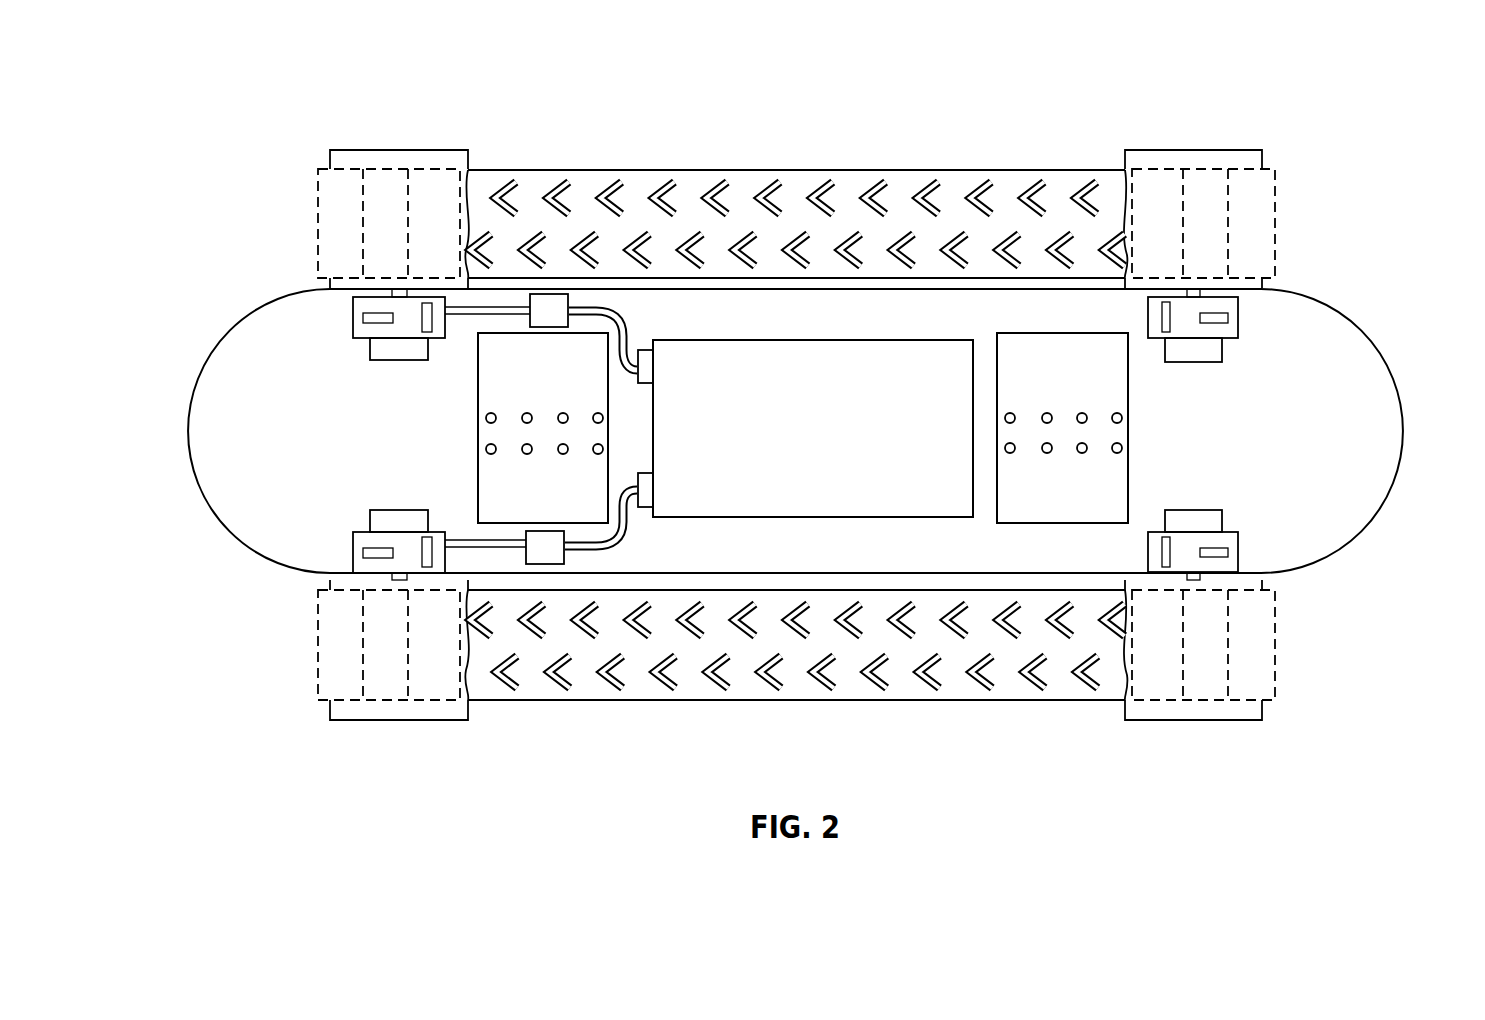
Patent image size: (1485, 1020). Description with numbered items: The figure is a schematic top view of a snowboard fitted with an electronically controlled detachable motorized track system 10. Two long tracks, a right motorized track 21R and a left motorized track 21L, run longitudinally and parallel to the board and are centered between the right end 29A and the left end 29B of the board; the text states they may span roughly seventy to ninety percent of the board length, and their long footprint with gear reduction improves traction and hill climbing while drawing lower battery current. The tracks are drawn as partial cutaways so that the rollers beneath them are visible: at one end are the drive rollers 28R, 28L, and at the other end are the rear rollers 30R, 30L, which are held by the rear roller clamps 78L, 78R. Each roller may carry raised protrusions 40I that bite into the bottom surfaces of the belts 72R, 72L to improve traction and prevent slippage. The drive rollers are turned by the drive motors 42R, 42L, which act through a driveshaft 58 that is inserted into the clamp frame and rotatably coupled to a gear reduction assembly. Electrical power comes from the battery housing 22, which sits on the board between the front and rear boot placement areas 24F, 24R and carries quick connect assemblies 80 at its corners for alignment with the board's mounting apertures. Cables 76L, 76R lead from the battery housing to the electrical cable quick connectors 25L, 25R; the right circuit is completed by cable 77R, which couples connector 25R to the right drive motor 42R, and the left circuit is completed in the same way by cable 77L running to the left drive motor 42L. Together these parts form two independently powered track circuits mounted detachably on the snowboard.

The detachable motorized track system 10 is at (518, 104).
The left motorized track 21L is at (752, 168).
The right motorized track 21R is at (868, 701).
The battery housing 22 is at (829, 434).
The front boot placement area 24F is at (564, 506).
The rear boot placement area 24R is at (1093, 388).
The electrical cable quick connector 25L is at (547, 293).
The electrical cable quick connector 25R is at (546, 565).
The drive roller 28L is at (418, 232).
The drive roller 28R is at (418, 664).
The right end of the board 29A is at (190, 455).
The left end of the board 29B is at (1376, 344).
The rear roller 30L is at (1233, 150).
The rear roller 30R is at (1277, 638).
The raised protrusions 40I is at (377, 177).
The drive motor 42L is at (353, 325).
The drive motor 42R is at (353, 545).
The driveshaft 58 is at (393, 291).
The belt 72L is at (1017, 257).
The belt 72R is at (992, 685).
The cable 76L is at (604, 316).
The cable 76R is at (617, 533).
The cable 77L is at (493, 310).
The cable 77R is at (486, 548).
The rear roller clamp 78L is at (1240, 323).
The rear roller clamp 78R is at (1240, 545).
The quick connect assembly 80 is at (1200, 291).